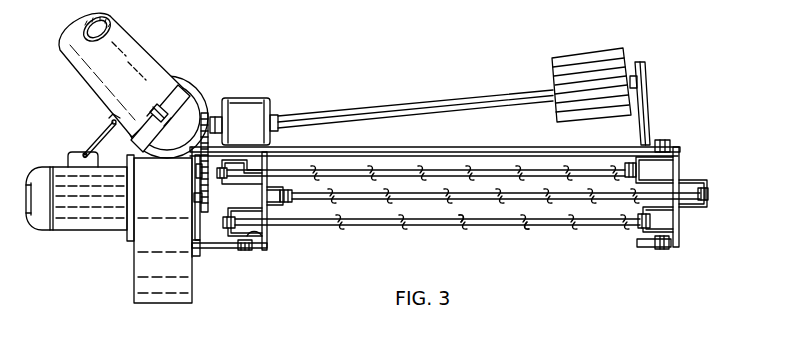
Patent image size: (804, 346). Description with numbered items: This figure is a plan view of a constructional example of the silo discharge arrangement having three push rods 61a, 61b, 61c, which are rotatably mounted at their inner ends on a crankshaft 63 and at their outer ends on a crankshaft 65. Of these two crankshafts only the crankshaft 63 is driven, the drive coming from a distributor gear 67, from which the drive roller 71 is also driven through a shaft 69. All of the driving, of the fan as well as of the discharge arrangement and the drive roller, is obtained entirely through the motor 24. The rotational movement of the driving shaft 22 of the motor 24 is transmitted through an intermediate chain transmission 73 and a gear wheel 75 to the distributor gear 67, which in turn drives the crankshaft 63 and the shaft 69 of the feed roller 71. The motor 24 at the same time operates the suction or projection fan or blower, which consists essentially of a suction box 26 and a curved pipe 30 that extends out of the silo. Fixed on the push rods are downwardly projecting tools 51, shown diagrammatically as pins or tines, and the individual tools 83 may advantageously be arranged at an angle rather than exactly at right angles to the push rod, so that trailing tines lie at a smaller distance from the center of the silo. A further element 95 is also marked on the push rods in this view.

The driving shaft 22 is at (196, 199).
The motor 24 is at (70, 222).
The suction box 26 is at (136, 284).
The curved pipe 30 is at (140, 62).
The tools 51 is at (412, 228).
The push rod 61a is at (368, 223).
The push rod 61b is at (607, 194).
The push rod 61c is at (498, 168).
The crankshaft 63 is at (266, 240).
The crankshaft 65 is at (656, 179).
The distributor gear 67 is at (258, 103).
The shaft 69 is at (462, 99).
The drive roller 71 is at (555, 74).
The intermediate chain transmission 73 is at (194, 171).
The gear wheel 75 is at (207, 113).
The tools 83 is at (532, 228).
The helical flight 95 is at (462, 227).